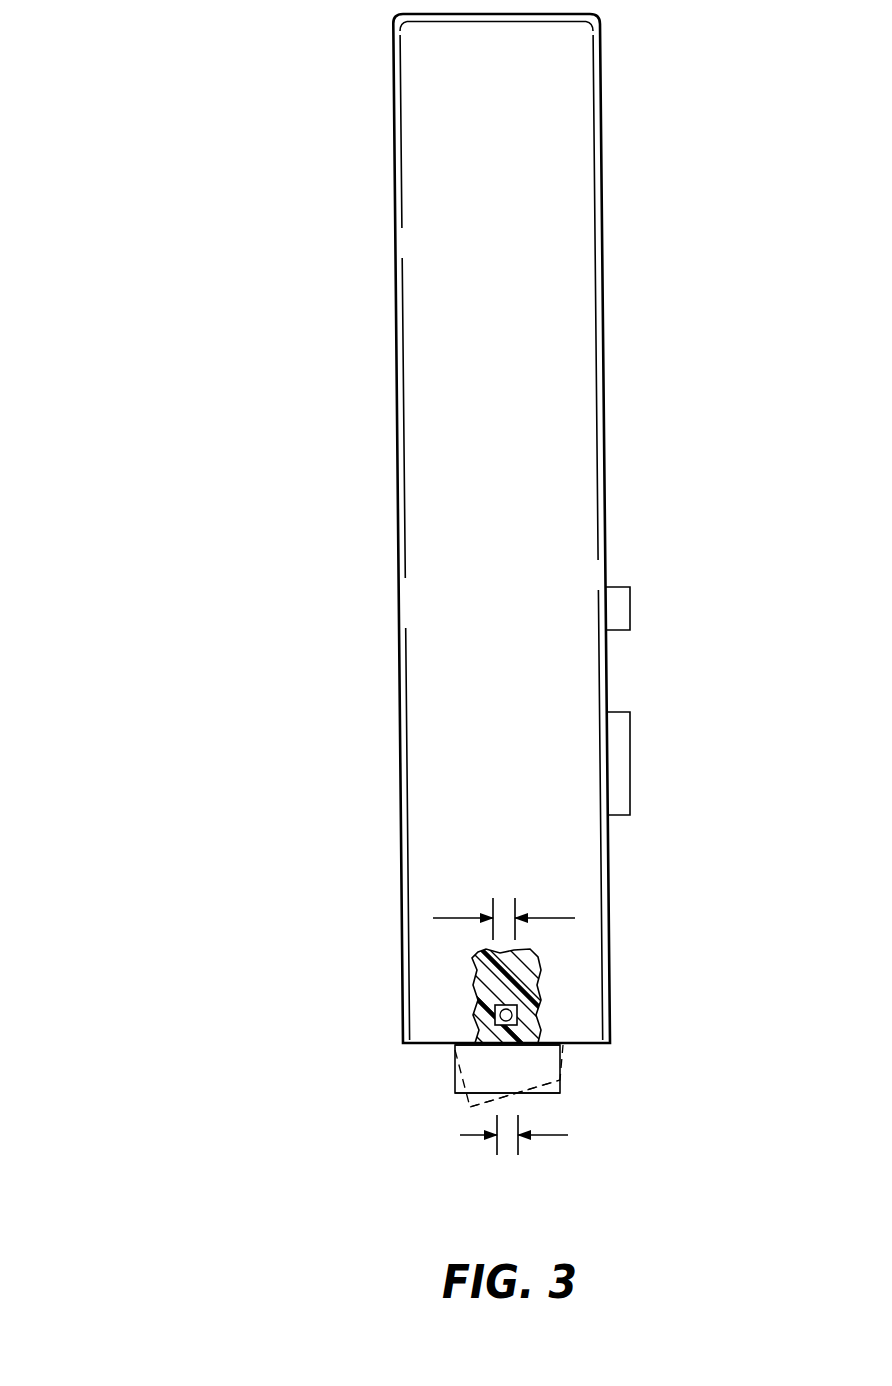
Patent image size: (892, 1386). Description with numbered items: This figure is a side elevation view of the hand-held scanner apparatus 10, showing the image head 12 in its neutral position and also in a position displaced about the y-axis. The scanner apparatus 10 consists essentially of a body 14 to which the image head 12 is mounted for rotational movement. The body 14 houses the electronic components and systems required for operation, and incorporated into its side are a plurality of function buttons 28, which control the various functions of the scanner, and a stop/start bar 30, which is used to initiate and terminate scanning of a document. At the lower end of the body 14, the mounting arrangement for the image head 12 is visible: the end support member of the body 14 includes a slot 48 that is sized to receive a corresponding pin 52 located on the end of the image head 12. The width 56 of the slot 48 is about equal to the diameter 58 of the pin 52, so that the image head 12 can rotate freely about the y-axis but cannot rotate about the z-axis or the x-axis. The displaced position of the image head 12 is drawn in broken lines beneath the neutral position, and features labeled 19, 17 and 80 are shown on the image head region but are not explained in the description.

The hand-held scanner apparatus 10 is at (220, 60).
The body 14 is at (393, 285).
The function buttons 28 is at (630, 607).
The stop/start bar 30 is at (630, 762).
The slot 48 is at (477, 970).
The pin 52 is at (512, 1013).
The width of slot 56 is at (452, 918).
The image head 12 is at (453, 1090).
The base upper surface 19 is at (457, 1060).
The base lower surface 17 is at (560, 1090).
The tilted base position 80 is at (563, 1065).
The diameter of pin 58 is at (462, 1135).